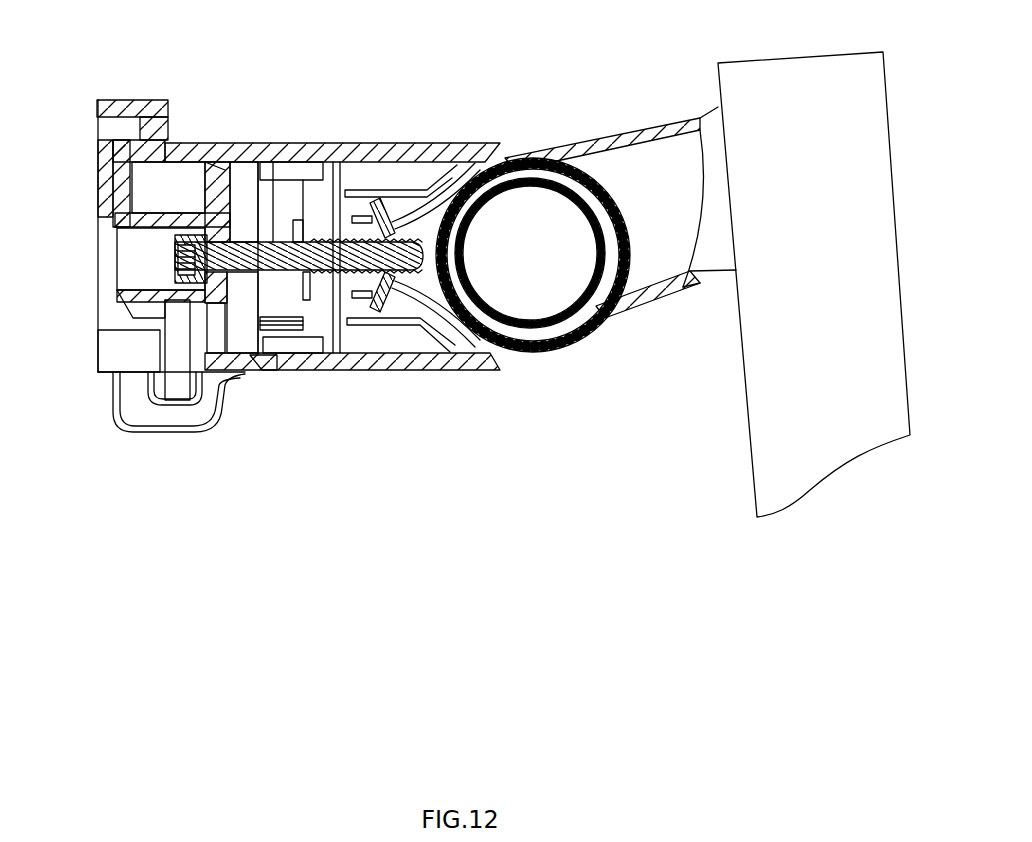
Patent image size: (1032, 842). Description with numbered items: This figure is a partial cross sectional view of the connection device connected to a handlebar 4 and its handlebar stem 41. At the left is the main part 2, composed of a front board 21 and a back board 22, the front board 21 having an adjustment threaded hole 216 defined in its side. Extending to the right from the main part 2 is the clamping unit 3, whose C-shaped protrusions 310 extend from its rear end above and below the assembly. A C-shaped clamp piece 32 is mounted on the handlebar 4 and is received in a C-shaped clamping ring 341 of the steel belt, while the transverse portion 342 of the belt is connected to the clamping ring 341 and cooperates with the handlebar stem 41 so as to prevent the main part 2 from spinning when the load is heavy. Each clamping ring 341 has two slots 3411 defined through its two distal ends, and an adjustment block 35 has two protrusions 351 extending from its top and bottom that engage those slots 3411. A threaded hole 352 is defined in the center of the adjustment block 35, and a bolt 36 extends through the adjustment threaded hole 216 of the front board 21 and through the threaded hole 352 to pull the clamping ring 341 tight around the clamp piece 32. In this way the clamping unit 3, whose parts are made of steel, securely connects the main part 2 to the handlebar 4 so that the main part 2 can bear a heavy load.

The main part 2 is at (195, 73).
The front board 21 is at (205, 152).
The back board 22 is at (311, 150).
The adjustment threaded holes 216 is at (143, 247).
The clamping unit 3 is at (368, 490).
The C-shaped protrusions 310 is at (462, 153).
The clamp pieces 32 is at (583, 320).
The C-shaped clamping rings 341 is at (545, 357).
The transverse portion 342 is at (625, 226).
The slots 3411 is at (387, 213).
The adjustment blocks 35 is at (472, 360).
The protrusions 351 is at (373, 207).
The threaded hole 352 is at (350, 277).
The bolts 36 is at (255, 260).
The handlebar 4 is at (585, 305).
The handlebar stem 41 is at (611, 148).